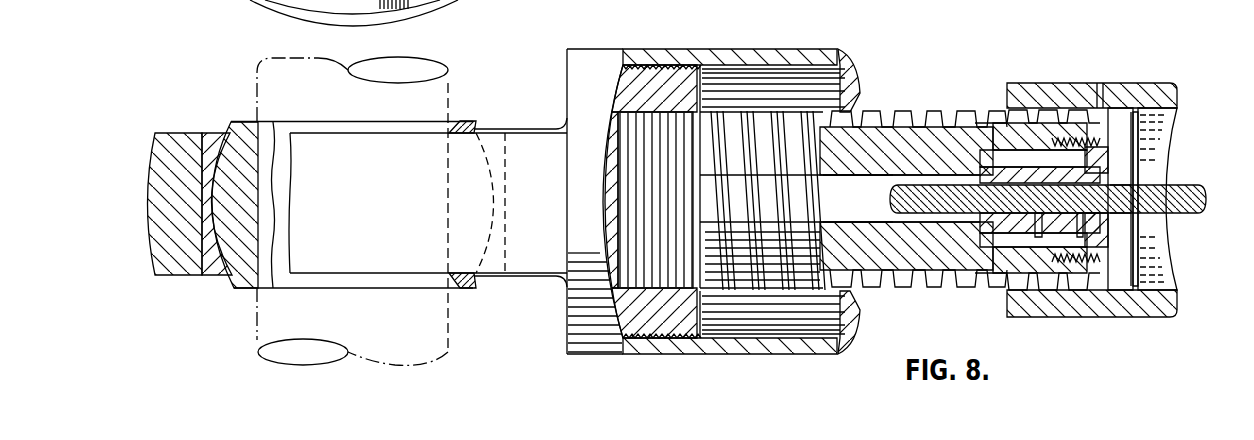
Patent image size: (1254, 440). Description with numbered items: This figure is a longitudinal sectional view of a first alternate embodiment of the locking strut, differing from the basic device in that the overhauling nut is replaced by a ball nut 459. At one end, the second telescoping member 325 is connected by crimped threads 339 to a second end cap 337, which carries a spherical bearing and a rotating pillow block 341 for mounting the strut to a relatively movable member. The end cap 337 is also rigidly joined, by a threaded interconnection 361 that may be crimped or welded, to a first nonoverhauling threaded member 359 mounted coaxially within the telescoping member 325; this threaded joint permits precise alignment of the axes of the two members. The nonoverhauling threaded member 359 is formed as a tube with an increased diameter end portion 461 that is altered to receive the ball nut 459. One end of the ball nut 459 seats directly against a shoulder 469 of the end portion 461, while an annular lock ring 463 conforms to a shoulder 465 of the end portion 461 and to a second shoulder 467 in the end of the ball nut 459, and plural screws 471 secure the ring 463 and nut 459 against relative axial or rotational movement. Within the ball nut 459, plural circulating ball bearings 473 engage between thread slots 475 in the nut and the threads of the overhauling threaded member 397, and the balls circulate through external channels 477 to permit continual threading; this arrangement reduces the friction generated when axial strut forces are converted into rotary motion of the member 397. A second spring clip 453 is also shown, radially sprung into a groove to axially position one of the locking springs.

The second end cap 337 is at (184, 133).
The threads 339 is at (231, 133).
The rotating pillow block 341 is at (240, 121).
The threaded interconnection 361 is at (647, 115).
The second telescoping member 325 is at (748, 52).
The first nonoverhauling threaded member 359 is at (905, 285).
The shoulder 469 is at (954, 157).
The ball nut 459 is at (993, 163).
The increased diameter end portion 461 is at (1023, 140).
The shoulder 465 is at (1073, 137).
The screws 471 is at (1108, 142).
The annular lock ring 463 is at (1112, 168).
The second shoulder 467 is at (1123, 182).
The overhauling threaded member 397 is at (1187, 215).
The second spring clip 453 is at (1123, 260).
The circulating ball bearings 473 is at (1013, 223).
The thread slots 475 is at (1028, 225).
The external channels 477 is at (1080, 240).